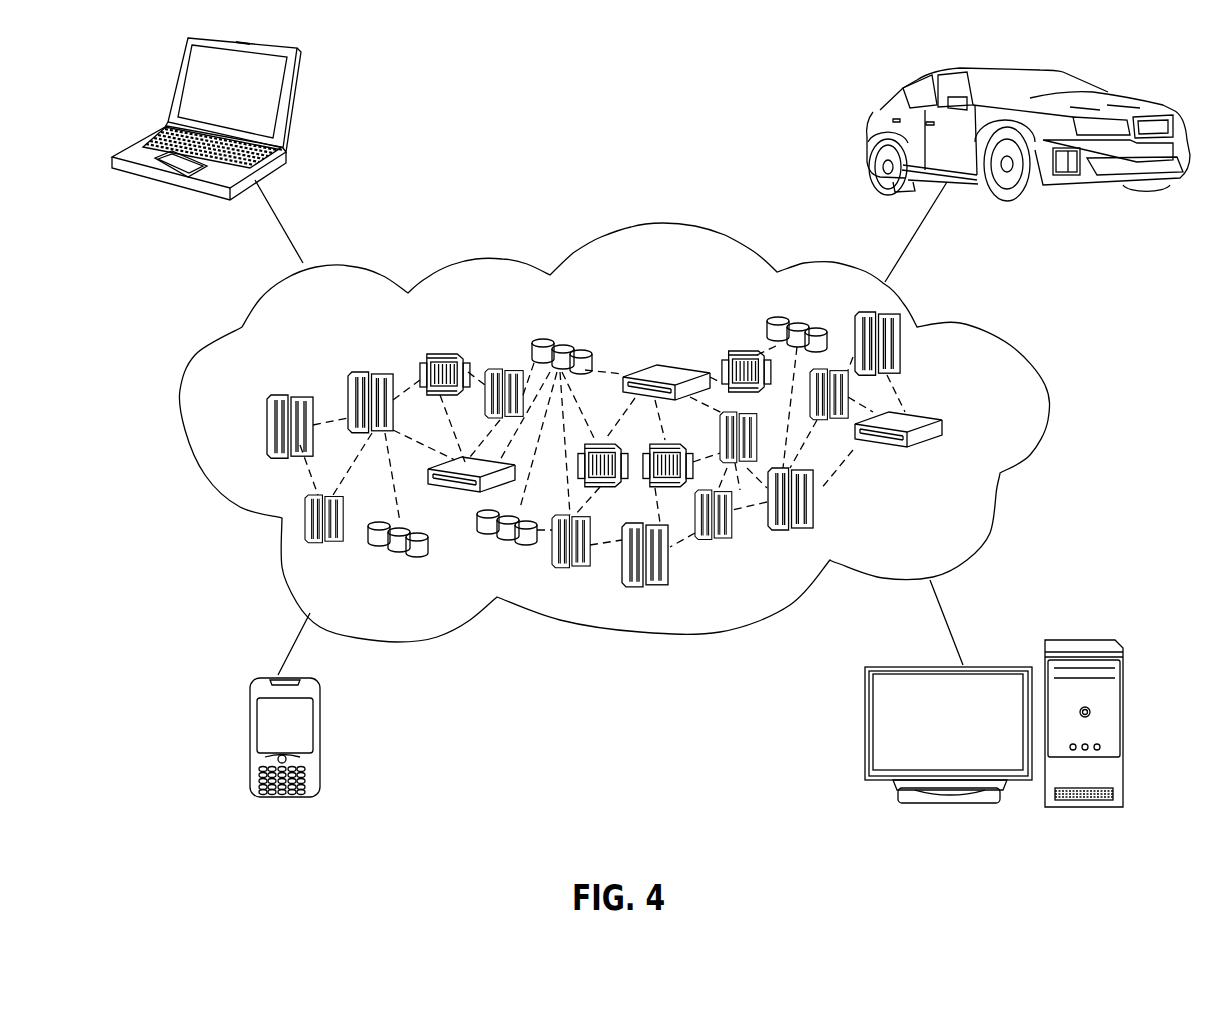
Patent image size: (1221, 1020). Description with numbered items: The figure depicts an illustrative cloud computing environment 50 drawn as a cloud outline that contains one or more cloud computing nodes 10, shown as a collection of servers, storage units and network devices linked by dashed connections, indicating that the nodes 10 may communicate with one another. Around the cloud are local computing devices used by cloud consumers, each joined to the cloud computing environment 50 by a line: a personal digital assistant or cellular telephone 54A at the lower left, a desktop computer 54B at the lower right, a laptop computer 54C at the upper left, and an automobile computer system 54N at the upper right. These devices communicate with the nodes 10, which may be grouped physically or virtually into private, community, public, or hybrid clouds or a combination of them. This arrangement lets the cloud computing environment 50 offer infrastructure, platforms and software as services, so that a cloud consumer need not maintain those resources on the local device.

The cloud computing nodes 10 is at (982, 425).
The cloud computing environment 50 is at (1003, 340).
The personal digital assistant (PDA) or cellular telephone 54A is at (250, 740).
The desktop computer 54B is at (1090, 640).
The laptop computer 54C is at (290, 105).
The automobile computer system 54N is at (875, 112).